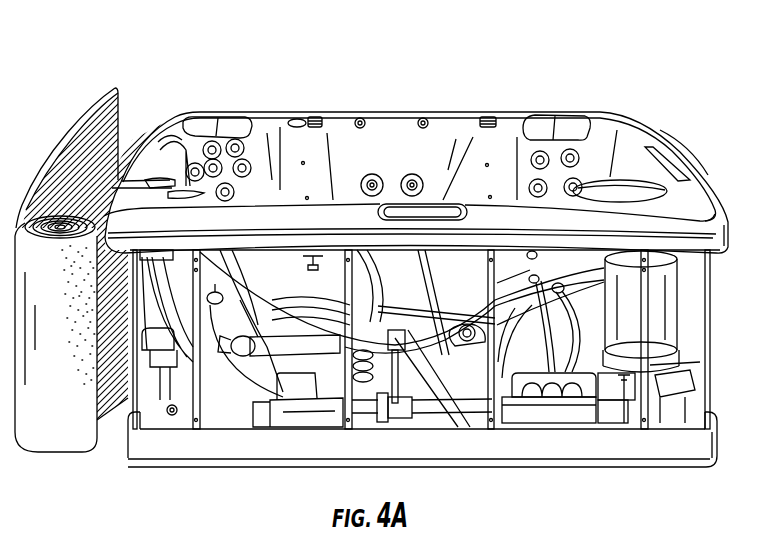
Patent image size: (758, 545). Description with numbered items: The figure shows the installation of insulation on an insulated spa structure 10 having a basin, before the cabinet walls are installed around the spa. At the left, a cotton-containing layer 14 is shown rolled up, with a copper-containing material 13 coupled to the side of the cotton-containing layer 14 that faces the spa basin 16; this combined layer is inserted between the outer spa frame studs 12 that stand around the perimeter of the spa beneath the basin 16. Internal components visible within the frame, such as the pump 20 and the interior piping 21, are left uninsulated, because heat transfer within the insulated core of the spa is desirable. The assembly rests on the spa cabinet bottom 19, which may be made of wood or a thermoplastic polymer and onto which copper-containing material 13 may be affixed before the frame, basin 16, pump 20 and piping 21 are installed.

The insulated spa structure 10 is at (606, 57).
The outer spa frame studs 12 is at (128, 412).
The copper-containing material 13 is at (101, 133).
The cotton-containing layer 14 is at (52, 395).
The spa basin 16 is at (452, 140).
The spa cabinet bottom 19 is at (677, 452).
The pump 20 is at (303, 412).
The interior piping 21 is at (573, 373).